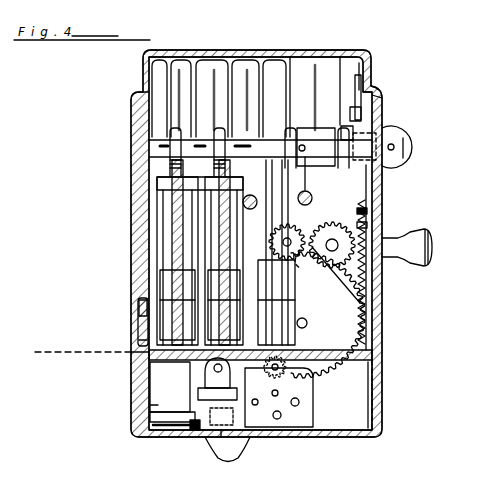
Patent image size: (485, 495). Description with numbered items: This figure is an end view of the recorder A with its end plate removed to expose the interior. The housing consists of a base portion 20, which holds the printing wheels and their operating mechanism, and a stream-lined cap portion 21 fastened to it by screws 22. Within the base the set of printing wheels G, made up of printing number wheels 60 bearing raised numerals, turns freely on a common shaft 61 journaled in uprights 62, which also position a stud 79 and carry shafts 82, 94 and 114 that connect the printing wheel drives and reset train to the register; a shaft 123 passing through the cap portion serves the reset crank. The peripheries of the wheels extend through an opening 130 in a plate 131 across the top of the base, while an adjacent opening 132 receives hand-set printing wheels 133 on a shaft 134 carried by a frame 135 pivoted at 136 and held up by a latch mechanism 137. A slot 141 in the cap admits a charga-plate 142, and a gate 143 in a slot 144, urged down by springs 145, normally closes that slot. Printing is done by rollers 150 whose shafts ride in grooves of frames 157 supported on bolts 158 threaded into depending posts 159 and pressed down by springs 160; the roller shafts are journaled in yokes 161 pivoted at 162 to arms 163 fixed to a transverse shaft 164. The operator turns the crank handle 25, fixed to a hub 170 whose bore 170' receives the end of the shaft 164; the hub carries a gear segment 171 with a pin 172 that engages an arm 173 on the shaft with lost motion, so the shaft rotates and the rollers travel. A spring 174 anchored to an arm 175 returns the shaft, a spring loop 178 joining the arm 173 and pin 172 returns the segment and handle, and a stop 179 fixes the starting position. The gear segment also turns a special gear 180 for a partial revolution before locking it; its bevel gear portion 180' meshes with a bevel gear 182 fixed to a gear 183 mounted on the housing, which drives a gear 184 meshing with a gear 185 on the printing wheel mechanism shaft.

The base portion 20 is at (386, 402).
The cap portion 21 is at (293, 60).
The screws 22 is at (374, 380).
The crank handle 25 is at (408, 146).
The printing number wheels 60 is at (300, 342).
The common shaft 61 is at (302, 318).
The uprights 62 is at (305, 428).
The stud 79 is at (275, 397).
The shaft 82 is at (300, 402).
The shaft 94 is at (255, 406).
The shaft 114 is at (282, 415).
The shaft 123 is at (250, 195).
The opening 130 is at (262, 344).
The plate 131 is at (386, 352).
The opening 132 is at (206, 362).
The printing wheels 133 is at (205, 372).
The shaft 134 is at (153, 408).
The frame 135 is at (214, 445).
The pivot 136 is at (160, 416).
The latch mechanism 137 is at (192, 430).
The slot 141 is at (132, 354).
The charga-plate 142 is at (68, 354).
The gate 143 is at (139, 340).
The slot 144 is at (139, 322).
The springs 145 is at (137, 306).
The roller 150 is at (147, 366).
The frame 157 is at (160, 192).
The bolts 158 is at (157, 180).
The depending posts 159 is at (180, 66).
The springs 160 is at (162, 158).
The yokes 161 is at (163, 294).
The pivot 162 is at (166, 272).
The arms 163 is at (286, 137).
The shaft 164 is at (140, 140).
The hub 170 is at (395, 139).
The bore 170' is at (397, 111).
The gear segment 171 is at (362, 96).
The pin 172 is at (348, 118).
The arm 173 is at (300, 226).
The spring 174 is at (308, 194).
The arm 175 is at (291, 136).
The spring loop 178 is at (342, 130).
The stop 179 is at (363, 54).
The gear 180 is at (393, 212).
The bevel gear portion 180' is at (407, 256).
The bevel gear 182 is at (368, 212).
The gear 183 is at (317, 226).
The gear 184 is at (378, 312).
The gear 185 is at (286, 369).
The recorder A is at (268, 52).
The set of printing wheels G is at (330, 323).